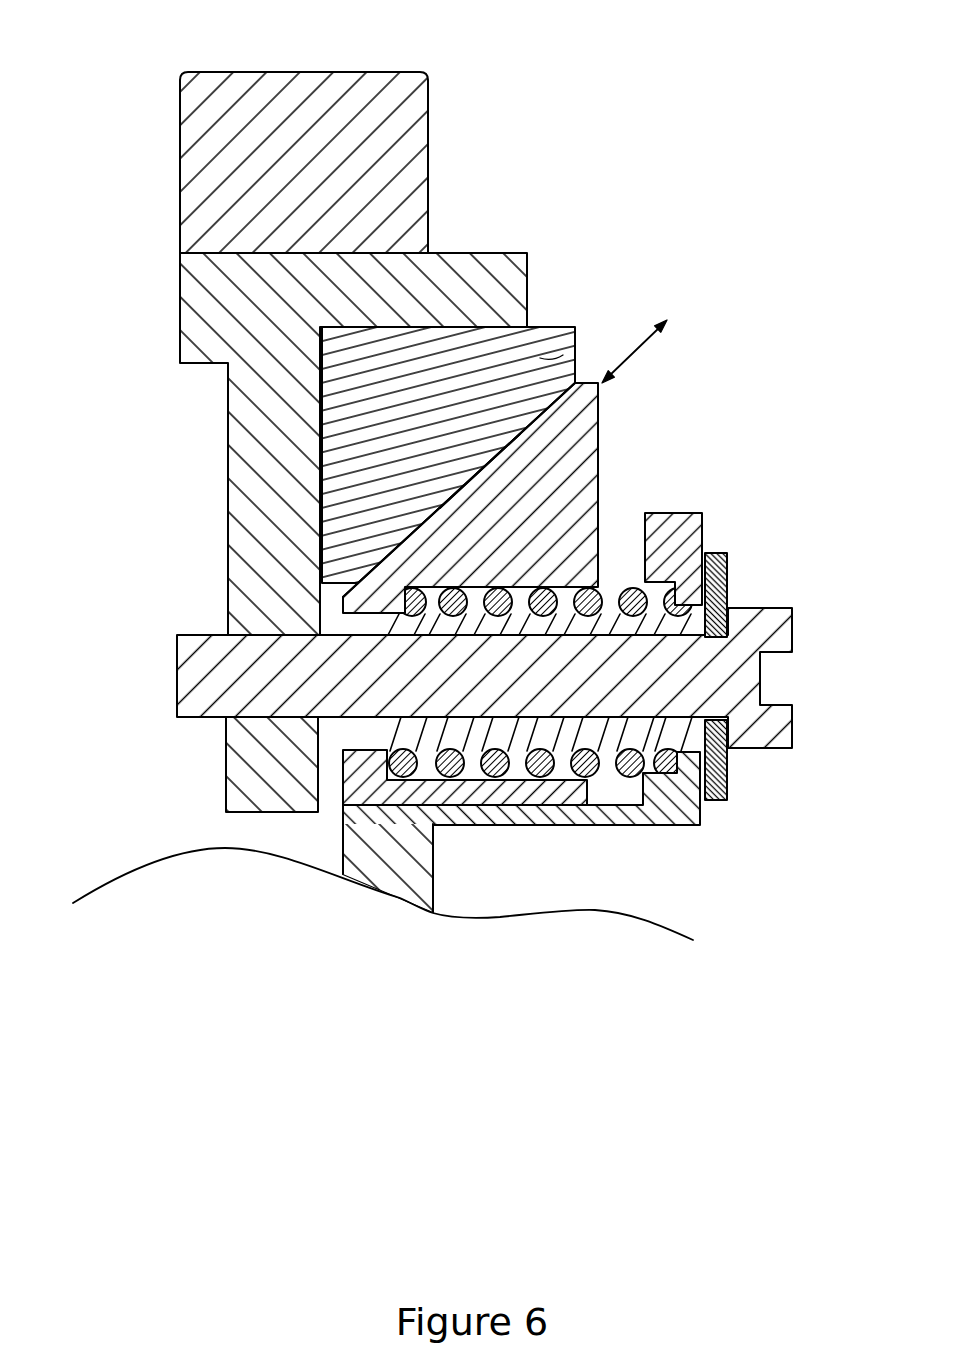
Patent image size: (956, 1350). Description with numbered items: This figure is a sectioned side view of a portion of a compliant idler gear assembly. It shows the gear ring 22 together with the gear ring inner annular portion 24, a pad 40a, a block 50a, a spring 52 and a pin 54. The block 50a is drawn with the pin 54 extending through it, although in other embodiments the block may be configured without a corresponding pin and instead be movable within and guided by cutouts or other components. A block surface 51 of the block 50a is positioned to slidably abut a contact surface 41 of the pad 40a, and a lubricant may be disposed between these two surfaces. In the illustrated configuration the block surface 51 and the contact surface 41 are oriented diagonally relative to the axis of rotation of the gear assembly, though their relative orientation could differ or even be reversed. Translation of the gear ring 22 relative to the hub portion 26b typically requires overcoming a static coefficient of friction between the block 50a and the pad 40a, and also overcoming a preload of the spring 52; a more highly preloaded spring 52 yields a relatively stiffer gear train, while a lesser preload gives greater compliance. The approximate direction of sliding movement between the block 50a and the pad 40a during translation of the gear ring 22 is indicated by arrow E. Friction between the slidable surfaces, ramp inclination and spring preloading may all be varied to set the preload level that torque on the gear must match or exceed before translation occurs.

The gear ring 22 is at (393, 100).
The gear ring inner annular portion 24 is at (210, 275).
The pad 40a is at (576, 340).
The block 50a is at (578, 483).
The contact surface 41 is at (528, 452).
The block surface 51 is at (484, 452).
The arrow E is at (632, 359).
The pin 54 is at (203, 673).
The spring 52 is at (598, 740).
The hub portion 26b is at (692, 826).